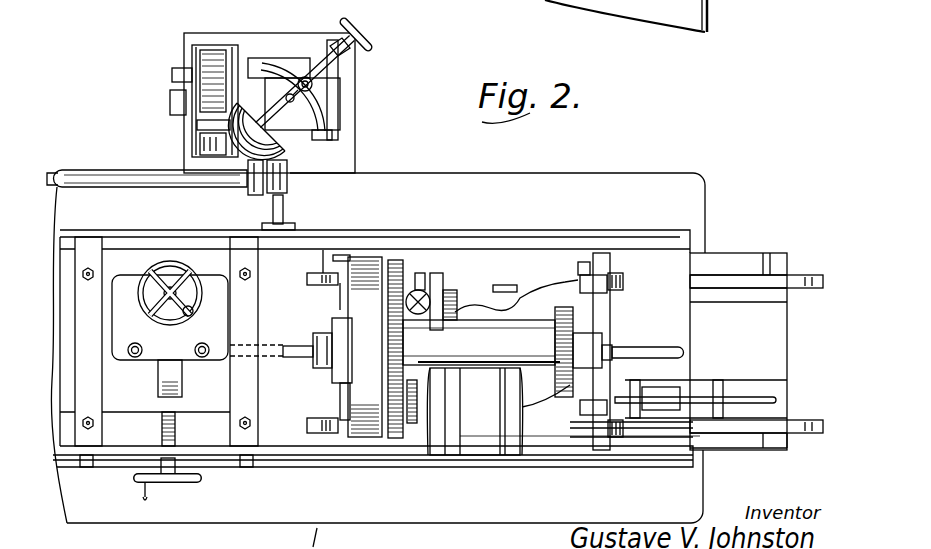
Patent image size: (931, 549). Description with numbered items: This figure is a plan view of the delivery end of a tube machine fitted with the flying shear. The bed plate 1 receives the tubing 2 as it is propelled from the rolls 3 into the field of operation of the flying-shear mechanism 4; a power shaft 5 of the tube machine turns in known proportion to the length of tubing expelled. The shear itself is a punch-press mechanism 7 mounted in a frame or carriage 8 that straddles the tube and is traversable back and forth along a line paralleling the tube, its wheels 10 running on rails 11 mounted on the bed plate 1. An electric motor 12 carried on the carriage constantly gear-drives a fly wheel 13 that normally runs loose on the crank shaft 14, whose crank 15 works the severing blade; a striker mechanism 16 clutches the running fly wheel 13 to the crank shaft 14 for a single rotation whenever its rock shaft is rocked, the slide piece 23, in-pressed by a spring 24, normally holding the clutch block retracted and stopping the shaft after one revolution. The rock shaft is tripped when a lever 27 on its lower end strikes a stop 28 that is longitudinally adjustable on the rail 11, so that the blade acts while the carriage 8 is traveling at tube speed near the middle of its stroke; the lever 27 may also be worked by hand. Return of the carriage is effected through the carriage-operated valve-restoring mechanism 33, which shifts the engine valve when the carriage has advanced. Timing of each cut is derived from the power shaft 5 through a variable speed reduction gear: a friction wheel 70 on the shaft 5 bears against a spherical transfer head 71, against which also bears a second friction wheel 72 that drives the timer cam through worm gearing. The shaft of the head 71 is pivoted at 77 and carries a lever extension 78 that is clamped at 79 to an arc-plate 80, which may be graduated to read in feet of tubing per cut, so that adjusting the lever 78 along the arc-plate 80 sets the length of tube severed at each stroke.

The bed plate 1 is at (711, 211).
The tubing 2 is at (292, 352).
The rolls 3 is at (229, 343).
The flying-shear mechanism 4 is at (578, 296).
The power shaft 5 is at (92, 181).
The punch-press mechanism 7 is at (583, 260).
The frame or carriage 8 is at (560, 412).
The wheels 10 is at (336, 285).
The rails 11 is at (778, 289).
The electric motor 12 is at (470, 441).
The fly wheel 13 is at (351, 386).
The crank shaft 14 is at (313, 362).
The crank 15 is at (613, 347).
The striker mechanism 16 is at (440, 272).
The slide piece 23 is at (455, 293).
The spring 24 is at (503, 286).
The lever 27 is at (422, 273).
The stop 28 is at (567, 302).
The carriage-operated valve-restoring mechanism 33 is at (686, 389).
The friction wheel 70 is at (290, 176).
The spherical transfer head 71 is at (288, 157).
The friction wheel 72 is at (198, 128).
The pivot 77 is at (272, 108).
The lever extension 78 is at (310, 128).
The clamp 79 is at (300, 72).
The arc-plate 80 is at (305, 115).